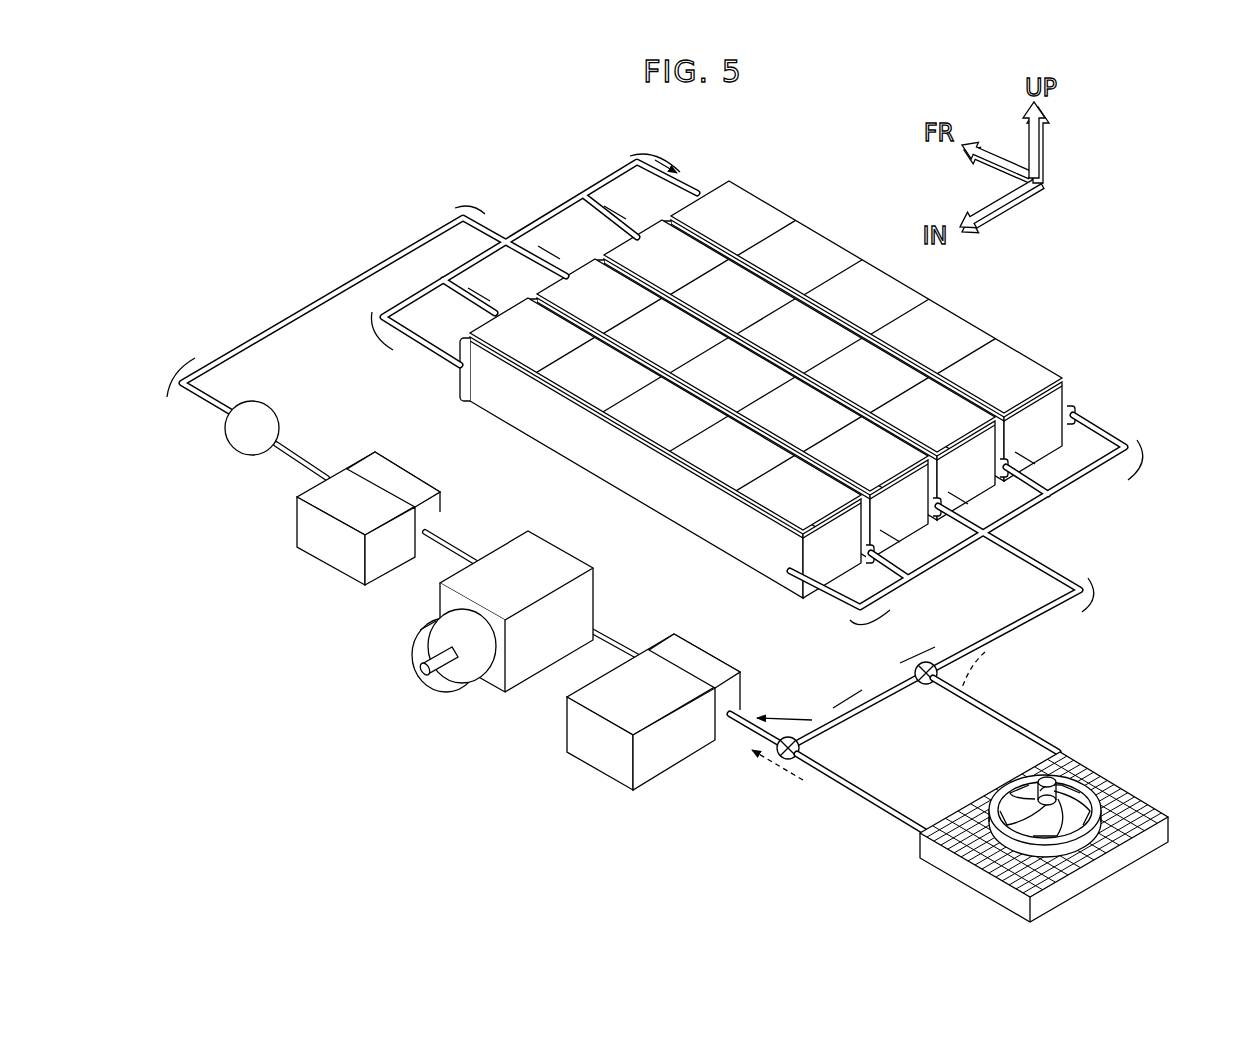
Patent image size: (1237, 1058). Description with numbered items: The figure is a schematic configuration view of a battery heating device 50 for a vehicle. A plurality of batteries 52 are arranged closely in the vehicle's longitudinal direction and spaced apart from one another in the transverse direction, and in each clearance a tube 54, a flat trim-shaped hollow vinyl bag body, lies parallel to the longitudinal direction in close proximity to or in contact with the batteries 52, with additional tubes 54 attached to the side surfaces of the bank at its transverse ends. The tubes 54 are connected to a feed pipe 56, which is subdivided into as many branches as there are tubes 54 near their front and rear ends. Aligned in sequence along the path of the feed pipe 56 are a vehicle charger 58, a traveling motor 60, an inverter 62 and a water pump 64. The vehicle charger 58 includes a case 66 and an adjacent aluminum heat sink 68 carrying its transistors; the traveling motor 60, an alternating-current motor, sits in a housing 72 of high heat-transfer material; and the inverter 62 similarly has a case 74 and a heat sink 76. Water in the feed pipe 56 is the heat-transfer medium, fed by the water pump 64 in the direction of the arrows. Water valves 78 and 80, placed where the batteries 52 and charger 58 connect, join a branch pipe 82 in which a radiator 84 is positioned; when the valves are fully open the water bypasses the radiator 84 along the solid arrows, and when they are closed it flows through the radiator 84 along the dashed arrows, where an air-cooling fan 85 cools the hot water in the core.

The battery heating device 50 is at (819, 402).
The batteries 52 is at (832, 262).
The tube 54 is at (1070, 388).
The feed pipe 56 is at (287, 318).
The vehicle charger 58 is at (649, 724).
The traveling motor 60 is at (515, 627).
The inverter 62 is at (365, 542).
The water pump 64 is at (238, 462).
The case 66 is at (670, 757).
The heat sink 68 is at (702, 662).
The housing 72 is at (557, 562).
The case 74 is at (380, 567).
The heat sink 76 is at (397, 478).
The water valve 78 is at (928, 686).
The water valve 80 is at (802, 750).
The branch pipe 82 is at (1022, 732).
The radiator 84 is at (1069, 824).
The air-cooling fan 85 is at (1076, 795).